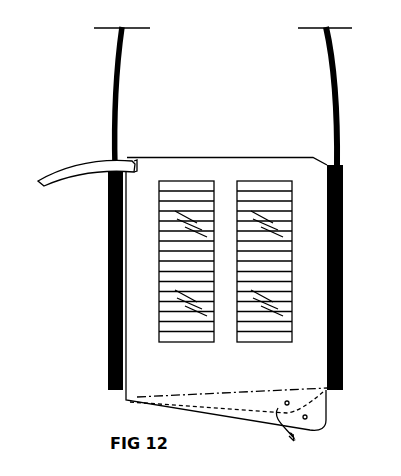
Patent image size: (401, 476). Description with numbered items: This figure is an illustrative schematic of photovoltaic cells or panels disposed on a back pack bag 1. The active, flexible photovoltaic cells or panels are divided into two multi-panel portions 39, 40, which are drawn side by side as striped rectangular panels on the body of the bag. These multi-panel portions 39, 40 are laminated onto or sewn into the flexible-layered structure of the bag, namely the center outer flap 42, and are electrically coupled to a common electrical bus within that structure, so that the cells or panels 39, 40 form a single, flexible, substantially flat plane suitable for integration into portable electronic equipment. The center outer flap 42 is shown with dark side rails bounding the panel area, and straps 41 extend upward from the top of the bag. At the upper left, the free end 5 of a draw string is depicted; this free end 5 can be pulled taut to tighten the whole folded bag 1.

The housing base 1 is at (303, 415).
The free end 5 is at (50, 174).
The multi-panel portion 39 is at (272, 273).
The multi-panel portion 40 is at (168, 277).
The strap 41 is at (116, 106).
The center outer flap 42 is at (148, 371).